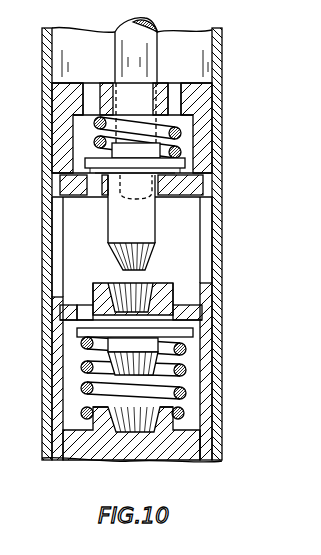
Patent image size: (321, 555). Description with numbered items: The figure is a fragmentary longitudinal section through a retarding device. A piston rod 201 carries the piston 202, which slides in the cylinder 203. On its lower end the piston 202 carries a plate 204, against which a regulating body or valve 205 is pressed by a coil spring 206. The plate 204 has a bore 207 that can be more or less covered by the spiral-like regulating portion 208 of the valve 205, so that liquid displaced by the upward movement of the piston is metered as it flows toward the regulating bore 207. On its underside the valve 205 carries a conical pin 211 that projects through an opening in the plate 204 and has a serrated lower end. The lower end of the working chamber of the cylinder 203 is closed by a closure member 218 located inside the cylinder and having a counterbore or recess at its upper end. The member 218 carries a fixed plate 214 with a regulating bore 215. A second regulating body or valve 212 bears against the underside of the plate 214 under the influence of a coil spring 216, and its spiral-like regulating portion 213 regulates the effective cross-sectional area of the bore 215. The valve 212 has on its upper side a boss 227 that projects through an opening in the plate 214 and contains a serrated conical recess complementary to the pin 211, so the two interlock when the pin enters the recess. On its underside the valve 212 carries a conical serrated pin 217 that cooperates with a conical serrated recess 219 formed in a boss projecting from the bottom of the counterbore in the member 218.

The piston rod 201 is at (158, 31).
The piston 202 is at (50, 102).
The cylinder 203 is at (217, 241).
The plate 204 is at (182, 196).
The regulating body or valve 205 is at (90, 160).
The coil spring 206 is at (95, 124).
The bore 207 is at (92, 196).
The spiral-like regulating portion 208 is at (173, 92).
The conical pin 211 is at (157, 249).
The regulating body or valve 212 is at (93, 342).
The spiral-like regulating portion 213 is at (85, 330).
The fixed plate 214 is at (178, 306).
The regulating bore 215 is at (80, 305).
The coil spring 216 is at (100, 371).
The conical serrated pin 217 is at (110, 376).
The closure member 218 is at (193, 465).
The conical serrated recess 219 is at (105, 461).
The boss 227 is at (162, 290).